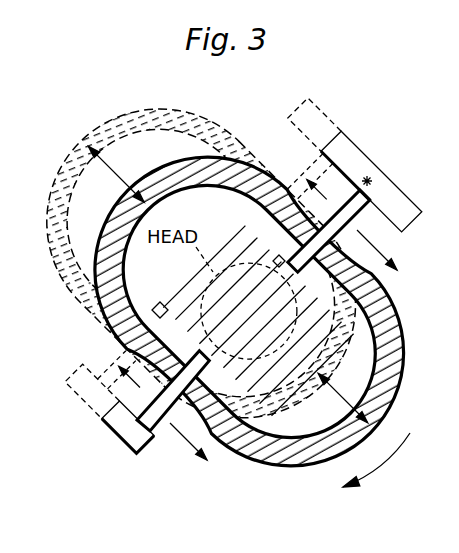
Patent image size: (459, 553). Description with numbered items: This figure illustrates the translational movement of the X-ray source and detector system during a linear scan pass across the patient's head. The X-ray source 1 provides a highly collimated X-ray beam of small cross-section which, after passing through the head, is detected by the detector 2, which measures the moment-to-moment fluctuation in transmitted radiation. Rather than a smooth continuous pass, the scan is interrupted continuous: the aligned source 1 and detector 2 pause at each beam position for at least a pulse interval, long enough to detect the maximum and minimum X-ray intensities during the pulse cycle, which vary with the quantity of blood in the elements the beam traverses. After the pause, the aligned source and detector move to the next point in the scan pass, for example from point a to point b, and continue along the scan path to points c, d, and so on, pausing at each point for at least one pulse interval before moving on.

The X-ray source 1 is at (369, 156).
The detector 2 is at (122, 440).
The scan pass point a is at (204, 262).
The scan pass point b is at (216, 275).
The scan pass point c is at (228, 286).
The scan pass point d is at (240, 298).